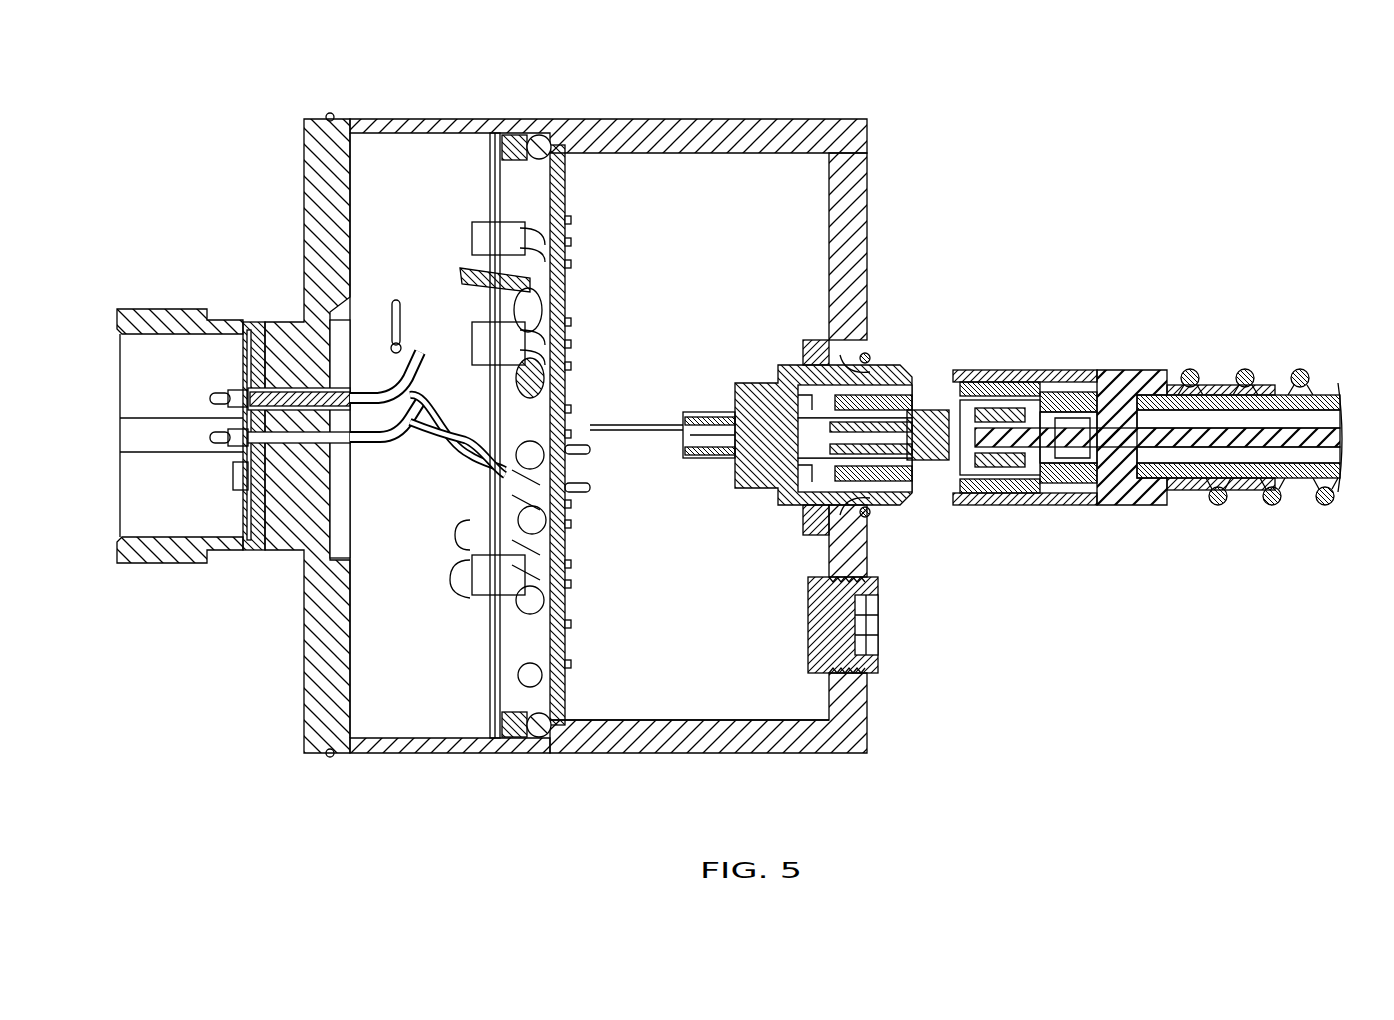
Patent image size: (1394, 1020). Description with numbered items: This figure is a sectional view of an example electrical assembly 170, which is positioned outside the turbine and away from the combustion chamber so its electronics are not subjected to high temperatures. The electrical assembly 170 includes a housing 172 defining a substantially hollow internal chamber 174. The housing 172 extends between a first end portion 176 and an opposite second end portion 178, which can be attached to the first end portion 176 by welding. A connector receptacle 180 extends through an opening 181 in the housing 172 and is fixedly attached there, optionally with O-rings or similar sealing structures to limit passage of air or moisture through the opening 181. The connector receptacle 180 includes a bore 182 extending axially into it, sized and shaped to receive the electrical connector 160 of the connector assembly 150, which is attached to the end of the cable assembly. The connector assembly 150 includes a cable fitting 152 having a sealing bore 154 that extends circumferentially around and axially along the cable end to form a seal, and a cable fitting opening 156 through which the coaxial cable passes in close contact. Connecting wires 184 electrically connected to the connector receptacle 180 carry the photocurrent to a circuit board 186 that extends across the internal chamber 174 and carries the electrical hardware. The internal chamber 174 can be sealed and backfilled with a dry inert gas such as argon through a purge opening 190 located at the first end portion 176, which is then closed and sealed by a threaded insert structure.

The connector assembly 150 is at (1052, 548).
The cable fitting 152 is at (1143, 512).
The sealing bore 154 is at (1214, 406).
The cable fitting opening 156 is at (1135, 410).
The electrical connector 160 is at (935, 378).
The electrical assembly 170 is at (247, 106).
The housing 172 is at (684, 119).
The internal chamber 174 is at (392, 716).
The first end portion 176 is at (856, 754).
The second end portion 178 is at (303, 742).
The connector receptacle 180 is at (880, 504).
The opening 181 is at (878, 355).
The bore 182 is at (898, 378).
The connecting wires 184 is at (668, 414).
The circuit board 186 is at (566, 700).
The purge opening 190 is at (882, 590).